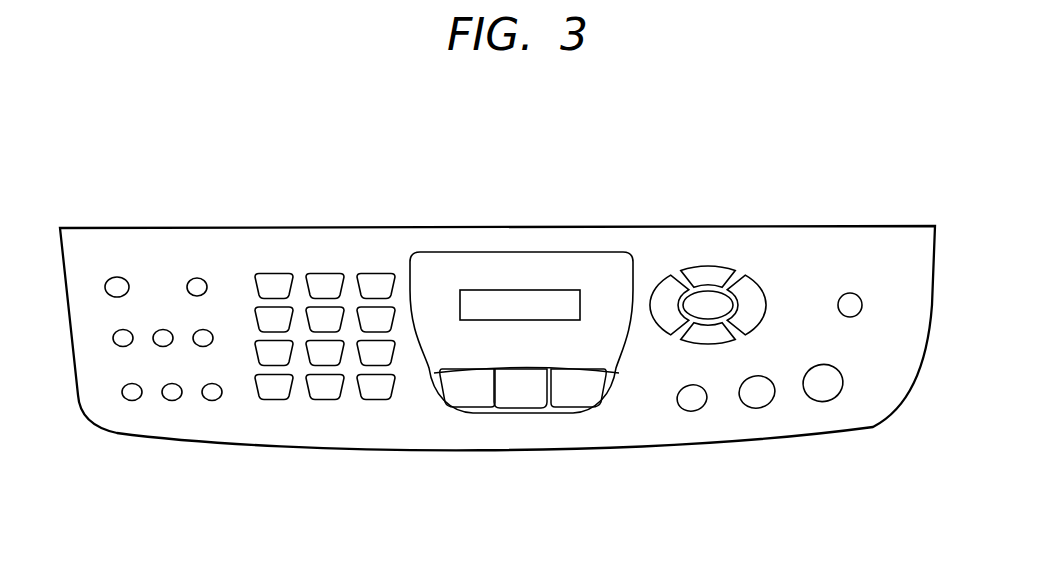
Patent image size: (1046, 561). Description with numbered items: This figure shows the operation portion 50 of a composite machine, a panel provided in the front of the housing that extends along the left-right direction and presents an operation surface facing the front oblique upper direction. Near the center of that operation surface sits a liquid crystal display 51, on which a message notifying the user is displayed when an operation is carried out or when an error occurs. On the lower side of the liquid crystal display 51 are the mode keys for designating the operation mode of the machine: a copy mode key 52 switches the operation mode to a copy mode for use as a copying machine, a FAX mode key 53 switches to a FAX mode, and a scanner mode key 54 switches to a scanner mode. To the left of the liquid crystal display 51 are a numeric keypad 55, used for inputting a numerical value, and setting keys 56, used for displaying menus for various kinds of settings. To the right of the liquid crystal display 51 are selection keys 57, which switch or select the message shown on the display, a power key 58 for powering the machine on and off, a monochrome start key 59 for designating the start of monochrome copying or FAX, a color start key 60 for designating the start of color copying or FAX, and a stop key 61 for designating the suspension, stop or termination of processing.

The operation portion 50 is at (569, 163).
The liquid crystal display 51 is at (493, 300).
The copy mode key 52 is at (473, 404).
The FAX mode key 53 is at (518, 404).
The scanner mode key 54 is at (569, 404).
The numeric keypad 55 is at (325, 430).
The setting keys 56 is at (182, 422).
The selection keys 57 is at (712, 251).
The power key 58 is at (852, 310).
The monochrome start key 59 is at (823, 390).
The color start key 60 is at (755, 400).
The stop key 61 is at (690, 403).